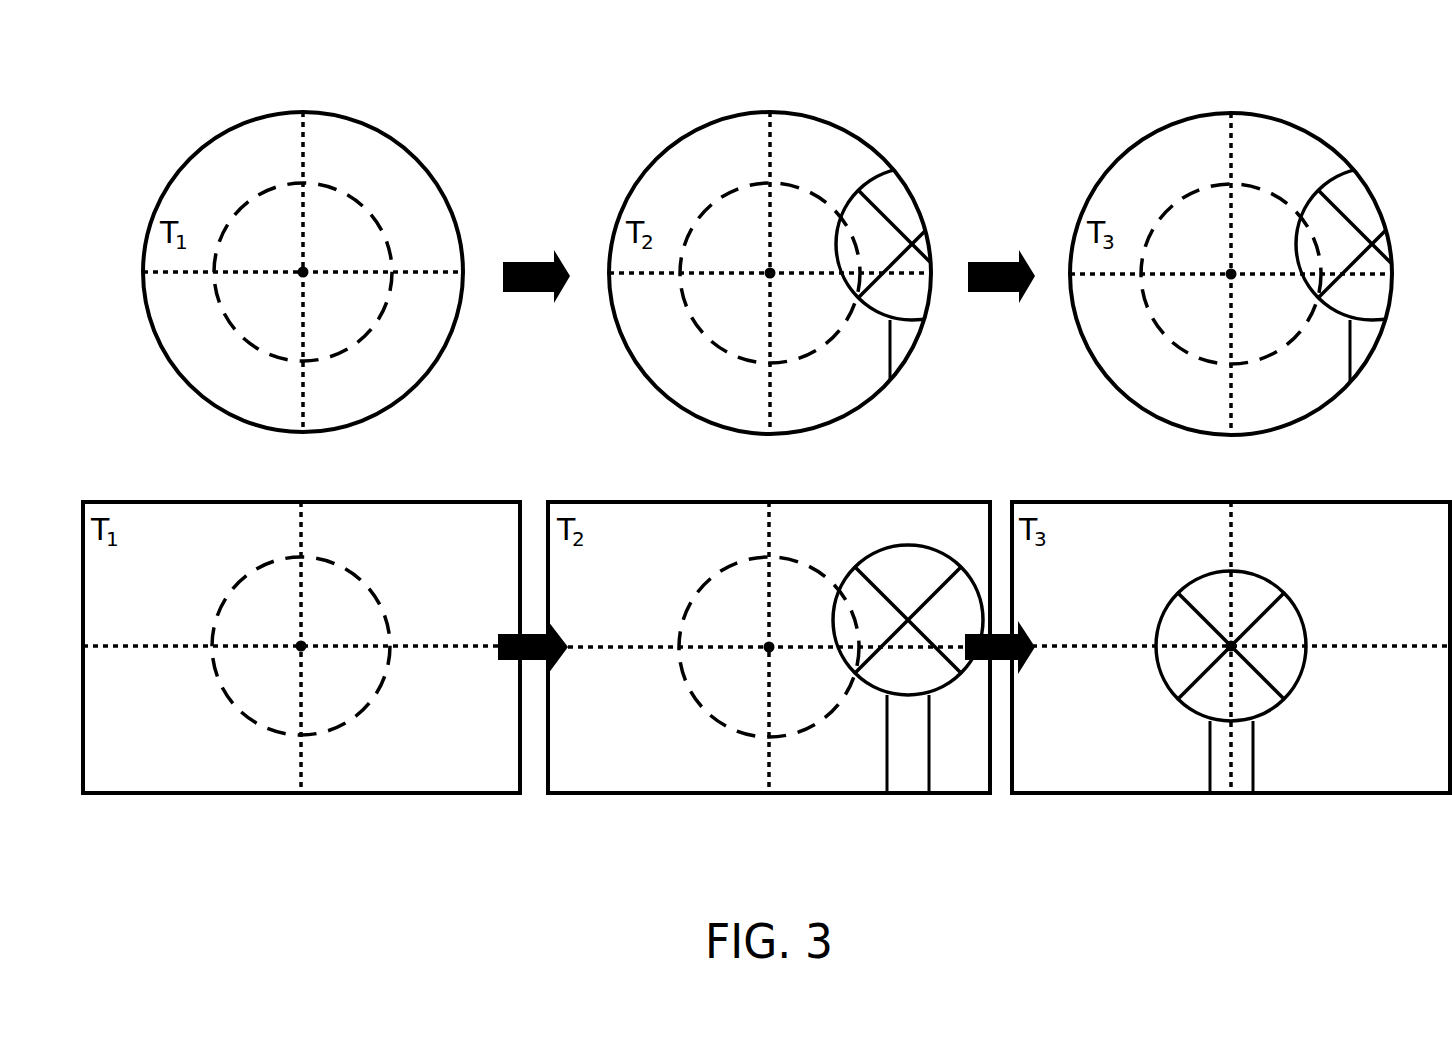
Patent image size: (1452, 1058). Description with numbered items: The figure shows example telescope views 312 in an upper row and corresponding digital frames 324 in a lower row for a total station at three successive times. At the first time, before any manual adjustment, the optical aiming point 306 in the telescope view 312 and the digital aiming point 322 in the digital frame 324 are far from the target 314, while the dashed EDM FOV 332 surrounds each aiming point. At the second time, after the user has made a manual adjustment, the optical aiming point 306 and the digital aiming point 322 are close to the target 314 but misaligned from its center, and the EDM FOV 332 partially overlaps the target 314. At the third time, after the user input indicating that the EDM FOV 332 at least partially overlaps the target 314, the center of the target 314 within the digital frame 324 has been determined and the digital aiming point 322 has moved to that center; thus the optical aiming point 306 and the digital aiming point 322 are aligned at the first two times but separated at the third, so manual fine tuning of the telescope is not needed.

The telescope view 312 is at (245, 120).
The optical aiming point 306 is at (303, 272).
The EDM FOV 332 is at (388, 232).
The target 314 is at (873, 178).
The digital frame 324 is at (325, 502).
The digital aiming point 322 is at (301, 646).